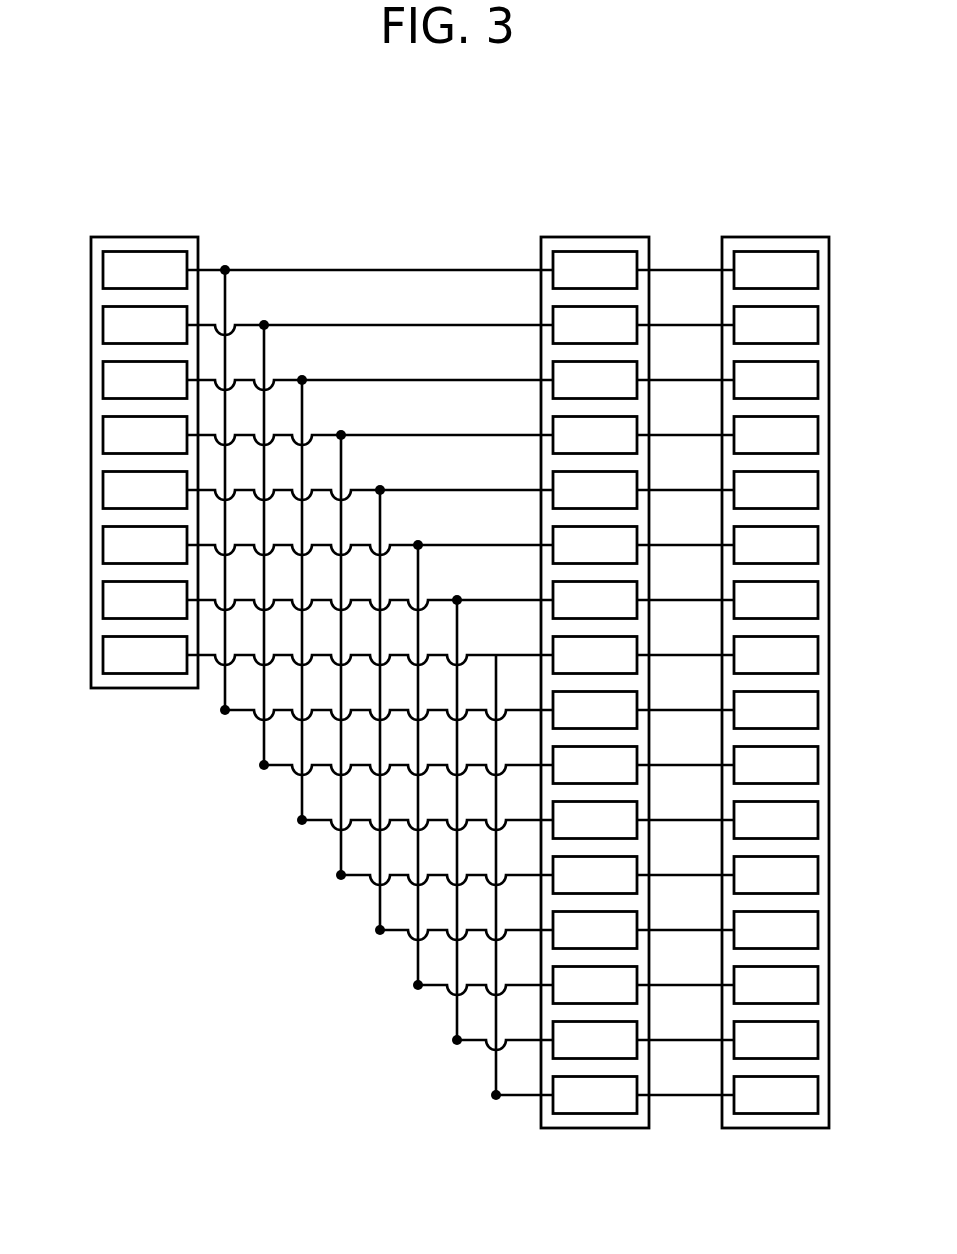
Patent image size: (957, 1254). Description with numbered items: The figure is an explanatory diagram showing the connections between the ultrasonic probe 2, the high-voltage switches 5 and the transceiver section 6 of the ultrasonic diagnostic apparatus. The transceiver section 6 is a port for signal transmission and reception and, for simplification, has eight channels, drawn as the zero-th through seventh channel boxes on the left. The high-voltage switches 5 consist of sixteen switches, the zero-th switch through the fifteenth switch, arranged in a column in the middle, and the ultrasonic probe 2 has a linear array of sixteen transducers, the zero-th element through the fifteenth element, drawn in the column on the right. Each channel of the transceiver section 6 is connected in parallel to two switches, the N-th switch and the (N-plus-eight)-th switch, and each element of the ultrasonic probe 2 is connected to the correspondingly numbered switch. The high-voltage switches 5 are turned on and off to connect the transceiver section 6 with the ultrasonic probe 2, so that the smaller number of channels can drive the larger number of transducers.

The transceiver section 6 is at (149, 237).
The high-voltage switches 5 is at (605, 237).
The ultrasonic probe 2 is at (778, 237).